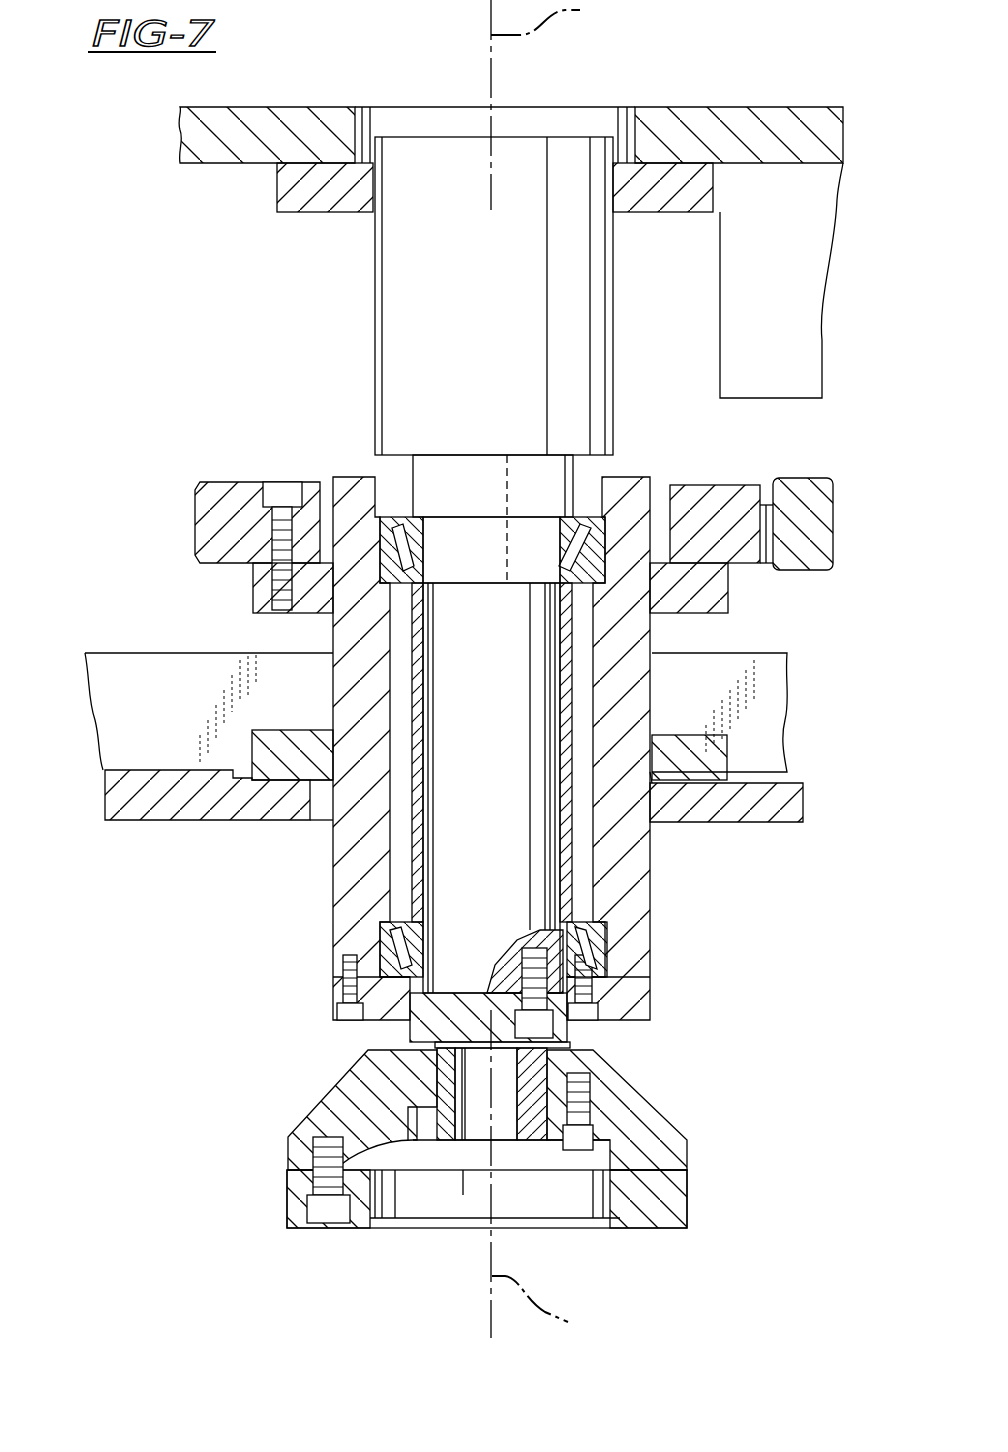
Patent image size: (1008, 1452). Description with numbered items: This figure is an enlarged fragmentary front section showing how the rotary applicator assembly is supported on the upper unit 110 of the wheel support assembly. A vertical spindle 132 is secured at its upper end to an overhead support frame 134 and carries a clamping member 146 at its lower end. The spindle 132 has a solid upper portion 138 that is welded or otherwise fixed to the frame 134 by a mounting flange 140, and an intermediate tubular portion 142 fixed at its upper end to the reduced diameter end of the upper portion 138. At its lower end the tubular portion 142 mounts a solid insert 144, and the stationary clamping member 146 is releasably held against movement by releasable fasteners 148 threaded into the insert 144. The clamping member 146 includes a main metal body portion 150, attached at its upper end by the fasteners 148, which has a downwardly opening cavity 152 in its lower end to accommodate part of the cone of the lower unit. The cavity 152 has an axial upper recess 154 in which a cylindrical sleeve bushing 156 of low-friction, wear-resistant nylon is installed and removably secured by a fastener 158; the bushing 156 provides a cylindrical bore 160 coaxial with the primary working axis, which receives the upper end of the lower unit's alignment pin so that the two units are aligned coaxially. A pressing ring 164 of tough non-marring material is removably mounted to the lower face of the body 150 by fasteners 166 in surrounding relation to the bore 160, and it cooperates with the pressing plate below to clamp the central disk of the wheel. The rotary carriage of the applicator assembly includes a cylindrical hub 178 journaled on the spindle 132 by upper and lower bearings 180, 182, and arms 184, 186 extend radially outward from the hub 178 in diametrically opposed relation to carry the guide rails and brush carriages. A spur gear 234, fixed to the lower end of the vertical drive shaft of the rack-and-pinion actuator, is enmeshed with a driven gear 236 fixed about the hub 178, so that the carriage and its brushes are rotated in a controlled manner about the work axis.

The upper unit 110 is at (203, 356).
The vertical spindle 132 is at (362, 328).
The overhead support frame 134 is at (330, 110).
The solid upper portion 138 is at (383, 272).
The mounting flange 140 is at (283, 188).
The intermediate tubular portion 142 is at (415, 655).
The solid insert 144 is at (460, 922).
The clamping member 146 is at (300, 1102).
The releasable fasteners 148 is at (553, 1030).
The main metal body portion 150 is at (372, 1068).
The cavity 152 is at (600, 1160).
The axial upper recess 154 is at (440, 1088).
The cylindrical sleeve bushing 156 is at (437, 1128).
The fastener 158 is at (590, 1110).
The cylindrical bore 160 is at (520, 1105).
The pressing ring 164 is at (670, 1195).
The fasteners 166 is at (322, 1210).
The cylindrical hub 178 is at (638, 905).
The upper bearing 180 is at (560, 546).
The lower bearing 182 is at (608, 955).
The arm 184 is at (120, 665).
The arm 186 is at (778, 690).
The spur gear 234 is at (805, 483).
The driven gear 236 is at (688, 487).